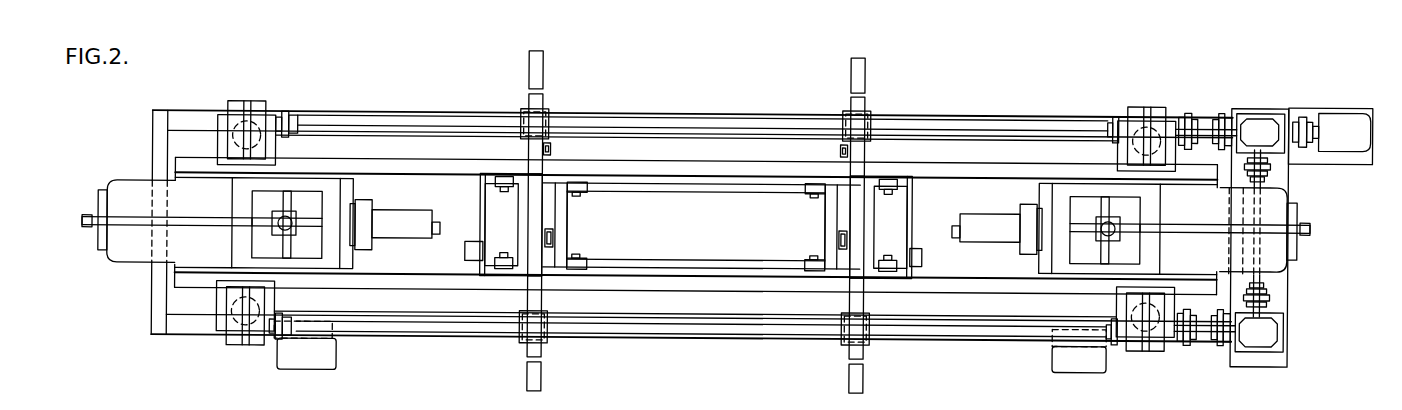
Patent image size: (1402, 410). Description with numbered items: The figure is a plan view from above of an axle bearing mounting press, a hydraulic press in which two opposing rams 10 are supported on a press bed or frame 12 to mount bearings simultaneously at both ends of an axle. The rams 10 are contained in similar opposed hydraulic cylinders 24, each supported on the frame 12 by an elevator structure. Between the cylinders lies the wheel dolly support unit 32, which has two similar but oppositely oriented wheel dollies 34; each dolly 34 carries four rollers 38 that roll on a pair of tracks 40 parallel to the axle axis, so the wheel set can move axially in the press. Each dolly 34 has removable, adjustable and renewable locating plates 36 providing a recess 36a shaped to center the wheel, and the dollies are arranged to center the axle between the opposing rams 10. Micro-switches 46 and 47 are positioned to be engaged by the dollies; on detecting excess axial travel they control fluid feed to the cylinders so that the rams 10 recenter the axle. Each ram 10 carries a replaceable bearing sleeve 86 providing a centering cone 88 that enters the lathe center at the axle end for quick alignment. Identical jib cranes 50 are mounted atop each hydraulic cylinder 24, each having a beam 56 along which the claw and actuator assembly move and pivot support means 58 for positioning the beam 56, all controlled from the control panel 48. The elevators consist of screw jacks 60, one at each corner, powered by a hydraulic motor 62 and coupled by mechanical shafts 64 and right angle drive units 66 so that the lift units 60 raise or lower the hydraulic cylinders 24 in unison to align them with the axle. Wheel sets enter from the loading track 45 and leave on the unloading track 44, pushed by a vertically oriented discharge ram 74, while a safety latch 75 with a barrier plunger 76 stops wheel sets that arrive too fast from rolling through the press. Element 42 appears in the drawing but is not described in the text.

The ram 10 is at (360, 240).
The frame 12 is at (648, 116).
The hydraulic cylinder 24 is at (143, 262).
The wheel dolly support unit 32 is at (715, 269).
The wheel dolly 34 is at (566, 214).
The locating plate 36 is at (530, 208).
The recess 36a is at (527, 228).
The roller 38 is at (497, 187).
The track 40 is at (705, 188).
The guide 42 is at (550, 278).
The unloading track 44 is at (538, 102).
The loading track 45 is at (545, 351).
The micro-switch 46 is at (468, 243).
The micro-switch 47 is at (917, 247).
The control panel 48 is at (315, 358).
The jib crane 50 is at (127, 220).
The beam 56 is at (213, 206).
The pivot support means 58 is at (273, 236).
The screw jack 60 is at (250, 117).
The hydraulic motor 62 is at (1344, 118).
The mechanical shaft 64 is at (733, 126).
The right angle drive unit 66 is at (1258, 122).
The ram 74 is at (554, 237).
The safety latch 75 is at (548, 146).
The barrier plunger 76 is at (551, 150).
The bearing sleeve 86 is at (385, 212).
The centering cone 88 is at (438, 238).